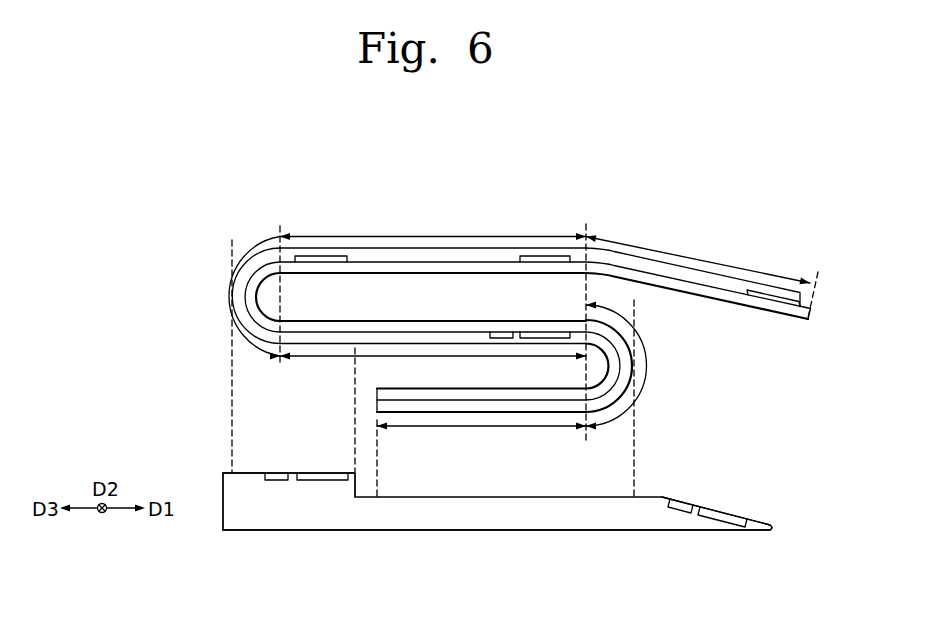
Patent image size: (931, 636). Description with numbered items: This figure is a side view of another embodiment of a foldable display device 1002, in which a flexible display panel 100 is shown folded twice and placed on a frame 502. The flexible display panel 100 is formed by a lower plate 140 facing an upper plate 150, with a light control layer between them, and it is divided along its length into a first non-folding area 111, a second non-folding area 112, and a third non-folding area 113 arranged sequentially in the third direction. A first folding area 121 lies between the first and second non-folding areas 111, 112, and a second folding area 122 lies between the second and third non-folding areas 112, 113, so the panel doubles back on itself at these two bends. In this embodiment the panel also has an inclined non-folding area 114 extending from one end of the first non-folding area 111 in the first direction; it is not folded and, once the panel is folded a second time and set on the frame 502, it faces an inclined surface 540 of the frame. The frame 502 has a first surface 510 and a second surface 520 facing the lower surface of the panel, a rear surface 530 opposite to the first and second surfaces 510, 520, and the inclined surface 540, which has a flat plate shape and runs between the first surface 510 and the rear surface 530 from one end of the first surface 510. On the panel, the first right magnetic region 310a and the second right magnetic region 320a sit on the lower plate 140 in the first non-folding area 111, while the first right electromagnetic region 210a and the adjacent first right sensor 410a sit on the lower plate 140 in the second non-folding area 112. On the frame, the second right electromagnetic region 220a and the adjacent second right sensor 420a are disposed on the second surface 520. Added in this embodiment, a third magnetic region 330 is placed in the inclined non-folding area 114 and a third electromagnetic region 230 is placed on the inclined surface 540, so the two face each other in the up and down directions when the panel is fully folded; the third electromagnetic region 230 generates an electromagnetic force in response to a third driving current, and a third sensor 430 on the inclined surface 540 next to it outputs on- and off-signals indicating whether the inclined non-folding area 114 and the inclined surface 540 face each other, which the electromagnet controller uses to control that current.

The foldable display device 1002 is at (679, 146).
The flexible display panel 100 is at (733, 212).
The first non-folding area 111 is at (433, 224).
The second non-folding area 112 is at (433, 368).
The third non-folding area 113 is at (481, 440).
The inclined non-folding area 114 is at (698, 258).
The first folding area 121 is at (230, 298).
The second folding area 122 is at (636, 366).
The lower plate 140 is at (262, 272).
The upper plate 150 is at (240, 282).
The first right magnetic region 310a is at (547, 256).
The second right magnetic region 320a is at (321, 256).
The first right electromagnetic region 210a is at (539, 332).
The first right sensor 410a is at (502, 332).
The third magnetic region 330 is at (773, 296).
The second right sensor 420a is at (276, 473).
The second right electromagnetic region 220a is at (323, 473).
The third sensor 430 is at (678, 508).
The third electromagnetic region 230 is at (725, 518).
The frame 502 is at (342, 520).
The first surface 510 is at (437, 498).
The second surface 520 is at (258, 473).
The rear surface 530 is at (515, 532).
The inclined surface 540 is at (771, 524).